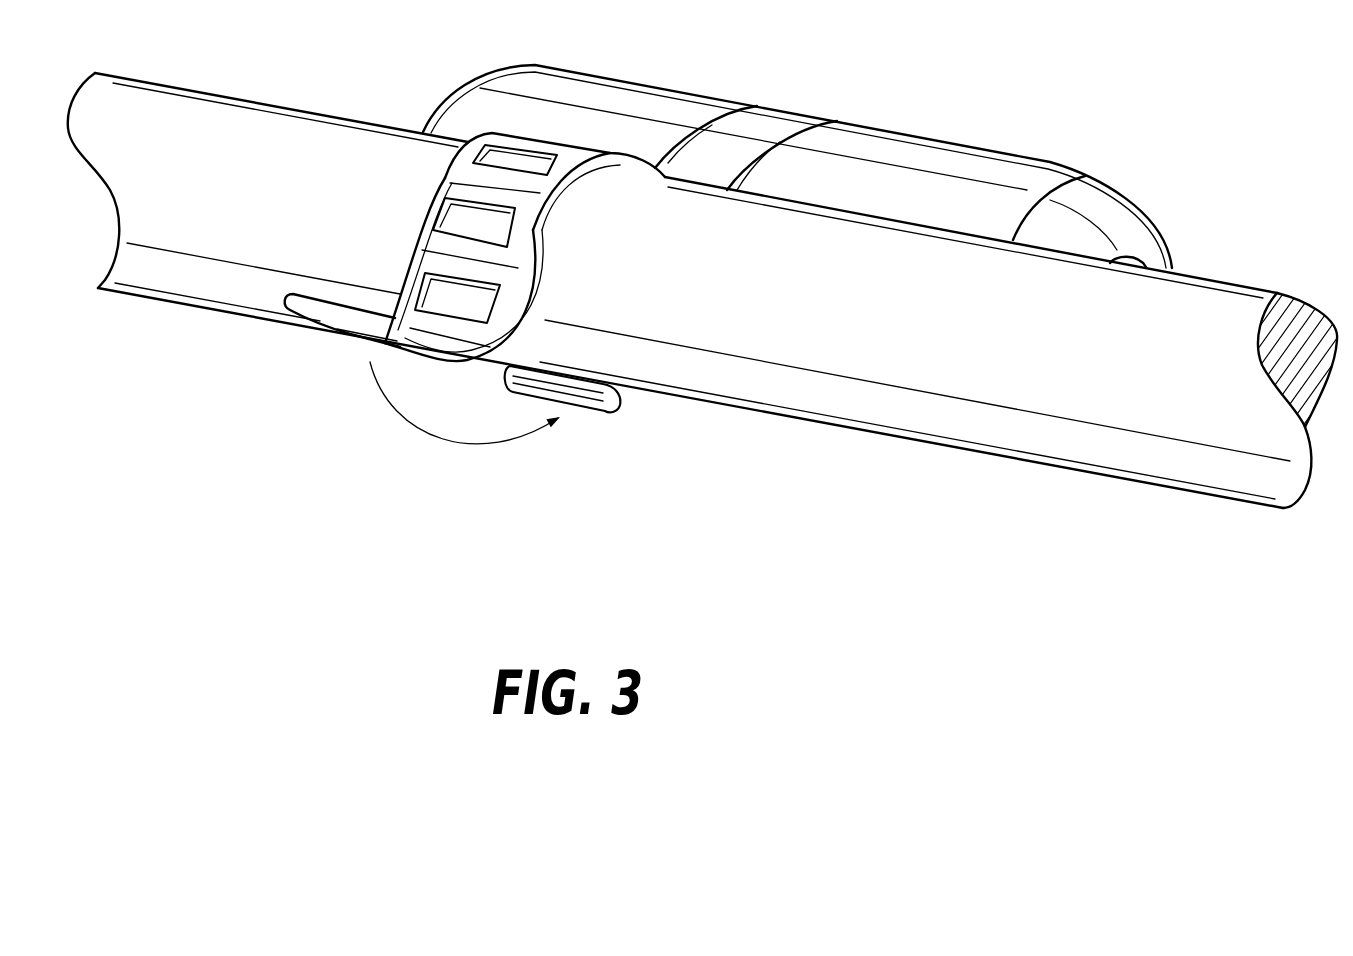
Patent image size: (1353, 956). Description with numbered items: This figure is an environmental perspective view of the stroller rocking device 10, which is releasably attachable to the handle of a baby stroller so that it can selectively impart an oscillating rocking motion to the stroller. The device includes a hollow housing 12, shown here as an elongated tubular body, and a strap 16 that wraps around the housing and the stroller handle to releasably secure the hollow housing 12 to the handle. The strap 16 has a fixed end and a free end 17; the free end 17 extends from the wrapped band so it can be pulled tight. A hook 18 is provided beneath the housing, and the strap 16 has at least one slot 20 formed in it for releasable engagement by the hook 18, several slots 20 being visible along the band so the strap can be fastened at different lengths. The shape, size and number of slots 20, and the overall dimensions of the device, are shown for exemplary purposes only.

The stroller rocking device 10 is at (923, 89).
The hollow housing 12 is at (1005, 172).
The strap 16 is at (533, 230).
The free end 17 is at (293, 297).
The hook 18 is at (620, 413).
The slot 20 is at (512, 166).